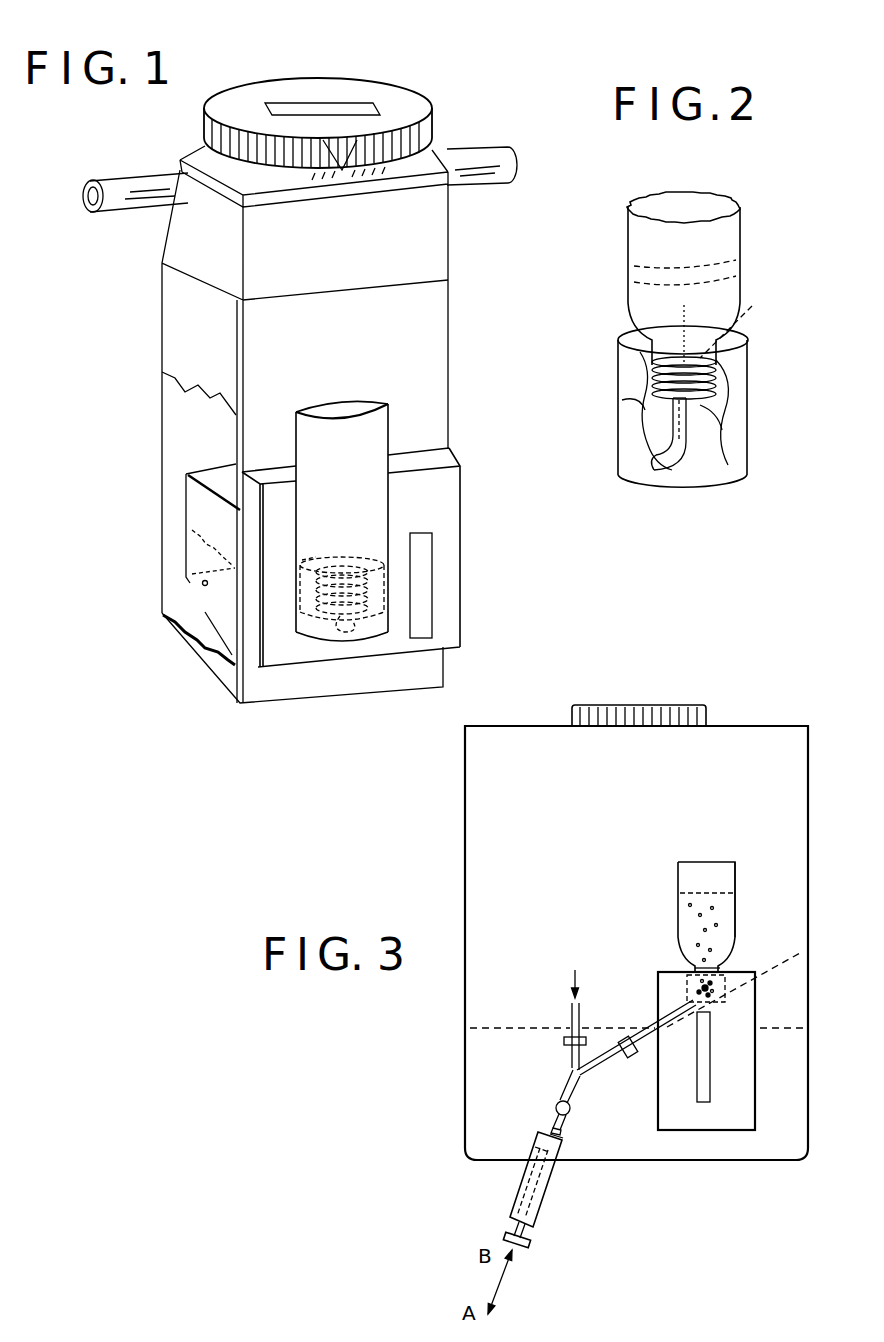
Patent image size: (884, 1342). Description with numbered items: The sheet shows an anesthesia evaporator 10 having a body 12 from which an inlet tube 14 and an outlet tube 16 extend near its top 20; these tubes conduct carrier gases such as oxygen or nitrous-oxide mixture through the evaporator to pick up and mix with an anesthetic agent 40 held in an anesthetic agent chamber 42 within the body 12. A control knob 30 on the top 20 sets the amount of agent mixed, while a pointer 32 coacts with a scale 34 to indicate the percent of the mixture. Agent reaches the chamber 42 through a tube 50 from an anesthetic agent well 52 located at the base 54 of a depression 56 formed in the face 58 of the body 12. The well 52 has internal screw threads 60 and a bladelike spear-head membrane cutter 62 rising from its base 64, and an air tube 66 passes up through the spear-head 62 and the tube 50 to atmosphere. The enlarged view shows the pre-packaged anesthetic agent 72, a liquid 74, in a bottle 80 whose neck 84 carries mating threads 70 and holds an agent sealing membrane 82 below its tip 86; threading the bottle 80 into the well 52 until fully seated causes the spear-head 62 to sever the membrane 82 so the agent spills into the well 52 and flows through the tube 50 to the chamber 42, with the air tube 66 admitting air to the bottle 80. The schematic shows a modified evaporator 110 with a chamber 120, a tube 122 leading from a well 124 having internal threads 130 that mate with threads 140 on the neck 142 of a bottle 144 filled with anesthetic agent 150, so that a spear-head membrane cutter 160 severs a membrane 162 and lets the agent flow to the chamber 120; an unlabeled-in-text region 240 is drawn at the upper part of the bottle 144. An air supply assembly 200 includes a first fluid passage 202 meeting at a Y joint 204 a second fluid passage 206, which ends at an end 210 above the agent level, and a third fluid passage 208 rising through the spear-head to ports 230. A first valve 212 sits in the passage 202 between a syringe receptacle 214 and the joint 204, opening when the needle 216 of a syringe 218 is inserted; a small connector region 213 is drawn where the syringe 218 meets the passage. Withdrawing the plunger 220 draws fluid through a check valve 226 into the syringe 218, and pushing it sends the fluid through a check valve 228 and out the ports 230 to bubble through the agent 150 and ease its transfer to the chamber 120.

In FIG. 1, the anesthesia evaporator 10 is at (483, 78).
In FIG. 1, the body 12 is at (418, 266).
In FIG. 1, the inlet tube 14 is at (134, 165).
In FIG. 1, the outlet tube 16 is at (486, 150).
In FIG. 1, the top 20 is at (205, 148).
In FIG. 1, the control knob 30 is at (375, 75).
In FIG. 1, the pointer 32 is at (343, 148).
In FIG. 1, the scale 34 is at (338, 178).
In FIG. 1, the anesthetic agent 40 is at (193, 535).
In FIG. 1, the anesthetic agent chamber 42 is at (214, 478).
In FIG. 1, the tube 50 is at (238, 658).
In FIG. 2, the tube 50 is at (748, 462).
In FIG. 1, the anesthetic agent well 52 is at (308, 553).
In FIG. 1, the base 54 is at (288, 640).
In FIG. 1, the depression 56 is at (363, 456).
In FIG. 1, the face 58 is at (405, 356).
In FIG. 1, the internal screw threads 60 is at (308, 600).
In FIG. 2, the internal screw threads 60 is at (718, 360).
In FIG. 1, the spear-head membrane cutter 62 is at (357, 562).
In FIG. 2, the spear-head membrane cutter 62 is at (752, 306).
In FIG. 1, the base 64 is at (350, 598).
In FIG. 2, the base 64 is at (642, 436).
In FIG. 2, the air tube 66 is at (688, 432).
In FIG. 2, the mating threads 70 is at (717, 380).
In FIG. 2, the pre-packaged anesthetic agent 72 is at (718, 258).
In FIG. 2, the liquid 74 is at (703, 280).
In FIG. 2, the bottle 80 is at (742, 197).
In FIG. 2, the agent sealing membrane 82 is at (612, 396).
In FIG. 2, the neck 84 is at (650, 358).
In FIG. 2, the tip 86 is at (690, 402).
In FIG. 3, the anesthesia evaporator 110 is at (755, 690).
In FIG. 3, the anesthetic agent chamber 120 is at (770, 768).
In FIG. 3, the tube 122 is at (712, 1095).
In FIG. 3, the well 124 is at (756, 973).
In FIG. 3, the internal threads 130 is at (705, 992).
In FIG. 3, the mating threads 140 is at (693, 972).
In FIG. 3, the neck 142 is at (692, 966).
In FIG. 3, the bottle 144 is at (740, 864).
In FIG. 3, the anesthetic agent 150 is at (747, 912).
In FIG. 3, the spear-head membrane cutter 160 is at (727, 890).
In FIG. 3, the membrane 162 is at (727, 1002).
In FIG. 3, the air supply assembly 200 is at (506, 1180).
In FIG. 3, the first fluid passage 202 is at (580, 1098).
In FIG. 3, the Y joint 204 is at (572, 1078).
In FIG. 3, the second fluid passage 206 is at (575, 1058).
In FIG. 3, the third fluid passage 208 is at (597, 1068).
In FIG. 3, the end 210 is at (572, 1005).
In FIG. 3, the first valve 212 is at (548, 1108).
In FIG. 3, the neck 213 is at (563, 1140).
In FIG. 3, the syringe receptacle 214 is at (530, 1150).
In FIG. 3, the needle 216 is at (567, 1128).
In FIG. 3, the syringe 218 is at (548, 1215).
In FIG. 3, the plunger 220 is at (535, 1243).
In FIG. 3, the check valve 226 is at (565, 1042).
In FIG. 3, the check valve 228 is at (632, 1060).
In FIG. 3, the ports 230 is at (758, 980).
In FIG. 3, the bottle 240 is at (692, 868).